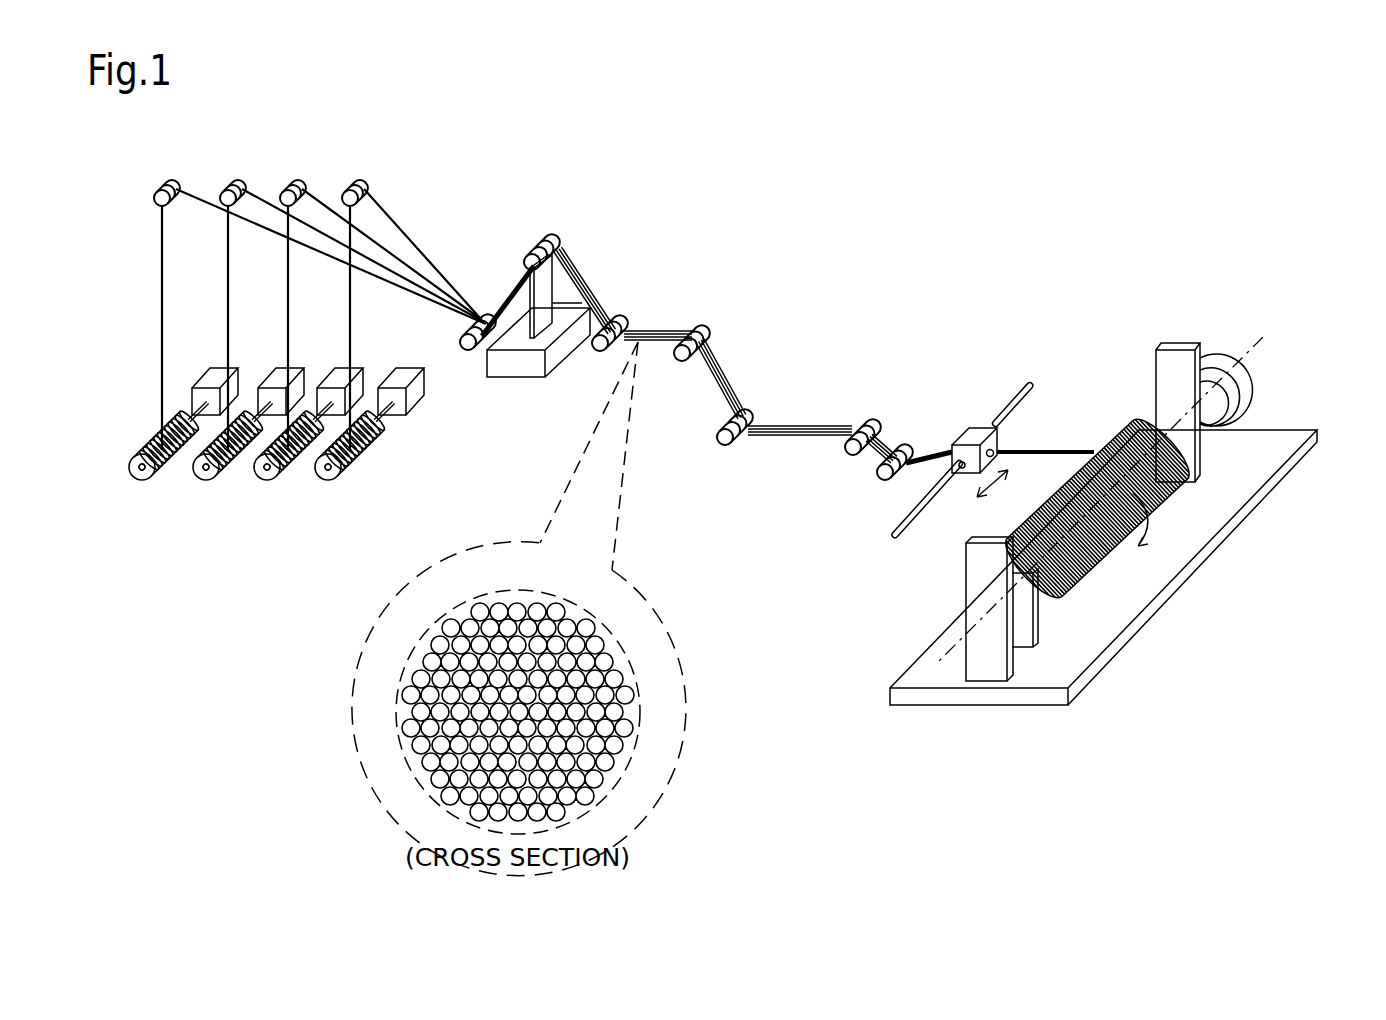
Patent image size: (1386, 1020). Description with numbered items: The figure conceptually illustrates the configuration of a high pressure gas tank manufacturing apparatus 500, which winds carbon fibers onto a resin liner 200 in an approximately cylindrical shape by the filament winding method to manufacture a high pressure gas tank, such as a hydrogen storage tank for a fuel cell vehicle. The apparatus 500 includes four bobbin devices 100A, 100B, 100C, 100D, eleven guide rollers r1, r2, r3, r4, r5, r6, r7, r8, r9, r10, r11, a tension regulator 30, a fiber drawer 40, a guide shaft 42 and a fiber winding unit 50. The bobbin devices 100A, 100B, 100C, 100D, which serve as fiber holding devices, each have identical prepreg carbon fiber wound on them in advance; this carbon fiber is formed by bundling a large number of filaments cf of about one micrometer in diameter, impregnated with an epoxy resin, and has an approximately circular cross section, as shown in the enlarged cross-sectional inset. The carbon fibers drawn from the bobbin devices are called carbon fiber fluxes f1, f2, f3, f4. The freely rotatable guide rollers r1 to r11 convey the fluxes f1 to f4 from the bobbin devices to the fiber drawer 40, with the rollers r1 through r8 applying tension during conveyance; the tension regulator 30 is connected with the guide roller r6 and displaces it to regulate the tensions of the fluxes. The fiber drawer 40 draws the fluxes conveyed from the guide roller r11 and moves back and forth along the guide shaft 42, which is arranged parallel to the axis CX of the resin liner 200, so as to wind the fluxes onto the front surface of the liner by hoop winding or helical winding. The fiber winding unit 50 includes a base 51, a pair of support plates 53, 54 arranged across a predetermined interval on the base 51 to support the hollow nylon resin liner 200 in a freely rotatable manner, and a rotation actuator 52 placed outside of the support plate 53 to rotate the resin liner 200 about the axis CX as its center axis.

The high pressure gas tank manufacturing apparatus 500 is at (1086, 176).
The bobbin device 100A is at (143, 481).
The bobbin device 100B is at (207, 481).
The bobbin device 100C is at (268, 481).
The bobbin device 100D is at (329, 481).
The carbon fiber flux f1 is at (452, 262).
The carbon fiber flux f2 is at (427, 256).
The carbon fiber flux f3 is at (411, 270).
The carbon fiber flux f4 is at (391, 248).
The guide roller r1 is at (174, 179).
The guide roller r2 is at (240, 179).
The guide roller r3 is at (300, 179).
The guide roller r4 is at (363, 179).
The guide roller r5 is at (468, 349).
The guide roller r6 is at (555, 238).
The guide roller r7 is at (618, 318).
The guide roller r8 is at (700, 328).
The guide roller r9 is at (746, 411).
The guide roller r10 is at (871, 420).
The guide roller r11 is at (902, 445).
The tension regulator 30 is at (532, 378).
The filament cf is at (616, 658).
The fiber drawer 40 is at (972, 422).
The guide shaft 42 is at (1026, 386).
The resin liner 200 is at (1108, 424).
The fiber winding unit 50 is at (1138, 497).
The base 51 is at (1199, 559).
The rotation actuator 52 is at (1230, 352).
The support plate 53 is at (1180, 496).
The support plate 54 is at (1040, 635).
The axis CX is at (1117, 492).